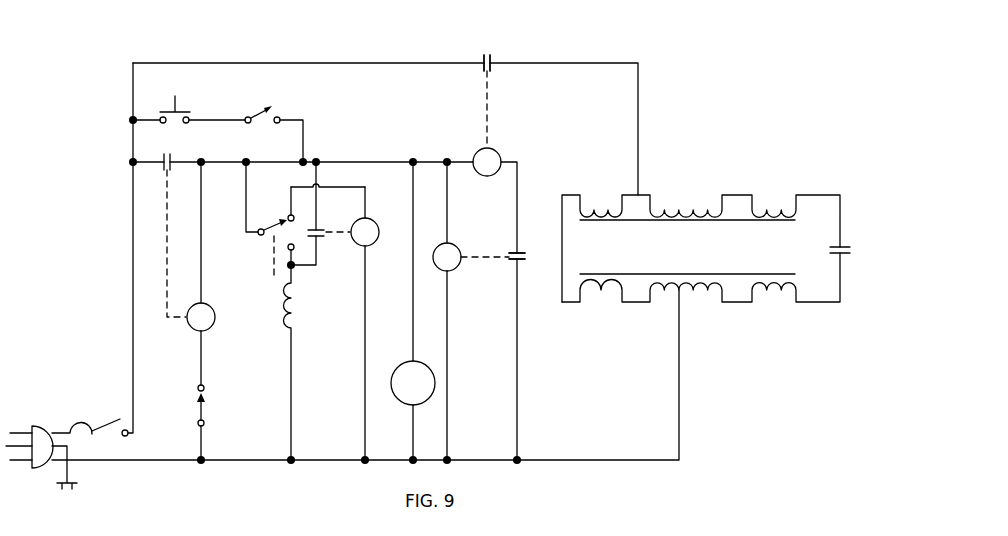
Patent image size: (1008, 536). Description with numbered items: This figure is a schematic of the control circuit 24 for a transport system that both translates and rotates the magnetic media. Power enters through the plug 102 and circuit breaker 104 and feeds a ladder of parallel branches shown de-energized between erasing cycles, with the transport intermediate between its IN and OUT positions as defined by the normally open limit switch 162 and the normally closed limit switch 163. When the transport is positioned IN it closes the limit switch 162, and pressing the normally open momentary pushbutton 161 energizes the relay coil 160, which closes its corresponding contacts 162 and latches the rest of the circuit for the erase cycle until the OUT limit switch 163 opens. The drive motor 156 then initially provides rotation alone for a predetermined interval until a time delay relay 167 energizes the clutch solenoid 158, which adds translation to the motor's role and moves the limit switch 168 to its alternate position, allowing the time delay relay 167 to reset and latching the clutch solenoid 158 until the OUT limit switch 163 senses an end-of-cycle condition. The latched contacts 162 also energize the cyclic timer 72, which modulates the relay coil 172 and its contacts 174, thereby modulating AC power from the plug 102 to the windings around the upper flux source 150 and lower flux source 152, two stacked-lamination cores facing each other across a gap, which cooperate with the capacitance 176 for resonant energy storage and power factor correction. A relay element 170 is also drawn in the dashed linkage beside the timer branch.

The control circuit 24 is at (105, 168).
The cyclic timer 72 is at (488, 296).
The plug 102 is at (34, 425).
The circuit breaker 104 is at (97, 449).
The upper flux source 150 is at (784, 182).
The lower flux source 152 is at (783, 312).
The drive motor 156 is at (412, 406).
The clutch solenoid 158 is at (275, 303).
The relay coil 160 is at (205, 332).
The normally open momentary pushbutton 161 is at (195, 95).
The normally open limit switch and relay contacts 162 is at (303, 93).
The normally closed limit switch 163 is at (205, 413).
The time delay relay 167 is at (335, 258).
The limit switch 168 is at (271, 240).
The relay contacts 170 is at (527, 263).
The relay coil 172 is at (498, 149).
The relay contacts 174 is at (493, 62).
The capacitance 176 is at (854, 266).